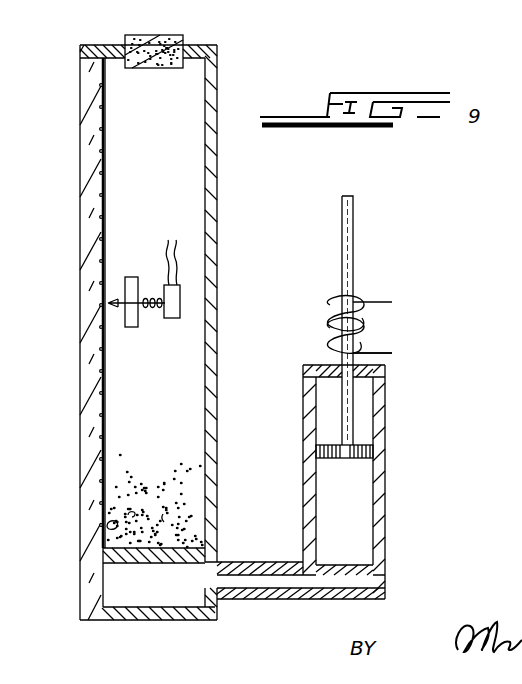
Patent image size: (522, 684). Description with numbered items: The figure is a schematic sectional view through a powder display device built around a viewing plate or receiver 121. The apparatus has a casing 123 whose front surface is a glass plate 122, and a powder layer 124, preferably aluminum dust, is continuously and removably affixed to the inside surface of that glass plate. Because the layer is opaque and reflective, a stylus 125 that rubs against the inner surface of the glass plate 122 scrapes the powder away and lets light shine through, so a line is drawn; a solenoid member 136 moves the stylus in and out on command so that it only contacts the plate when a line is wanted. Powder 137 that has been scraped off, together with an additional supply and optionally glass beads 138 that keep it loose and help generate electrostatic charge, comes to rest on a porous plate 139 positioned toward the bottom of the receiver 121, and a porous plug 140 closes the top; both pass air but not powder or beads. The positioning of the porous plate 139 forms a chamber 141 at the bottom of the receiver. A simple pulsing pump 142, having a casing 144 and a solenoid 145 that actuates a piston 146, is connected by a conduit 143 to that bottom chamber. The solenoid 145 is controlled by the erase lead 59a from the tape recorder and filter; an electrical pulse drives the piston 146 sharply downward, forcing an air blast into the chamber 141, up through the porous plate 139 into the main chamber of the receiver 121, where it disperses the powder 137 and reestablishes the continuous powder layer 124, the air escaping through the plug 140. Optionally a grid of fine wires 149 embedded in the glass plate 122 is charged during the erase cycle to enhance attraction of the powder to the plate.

The viewing plate 121 is at (230, 83).
The glass plate 122 is at (83, 283).
The casing 123 is at (217, 213).
The powder layer 124 is at (135, 303).
The stylus 125 is at (120, 258).
The solenoid member 136 is at (175, 318).
The powder 137 is at (186, 513).
The glass beads 138 is at (110, 526).
The porous plate 139 is at (125, 557).
The porous plug 140 is at (156, 37).
The chamber 141 is at (161, 598).
The pulsing pump 142 is at (400, 455).
The conduit 143 is at (273, 582).
The casing 144 is at (386, 393).
The solenoid 145 is at (356, 315).
The piston 146 is at (340, 424).
The grid of fine wires 149 is at (96, 106).
The erase lead 59a is at (384, 350).